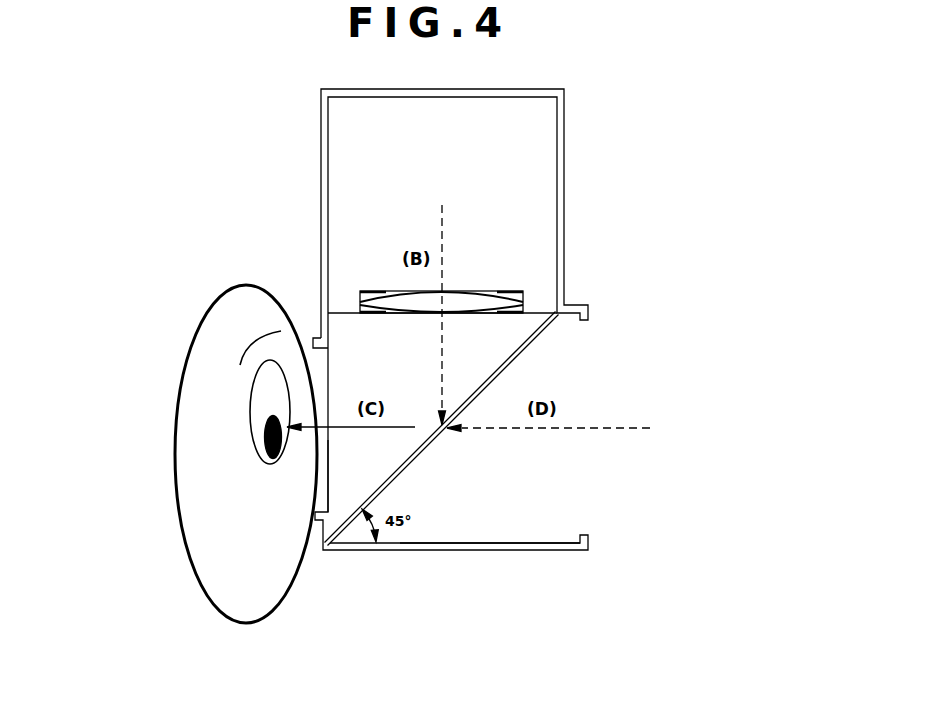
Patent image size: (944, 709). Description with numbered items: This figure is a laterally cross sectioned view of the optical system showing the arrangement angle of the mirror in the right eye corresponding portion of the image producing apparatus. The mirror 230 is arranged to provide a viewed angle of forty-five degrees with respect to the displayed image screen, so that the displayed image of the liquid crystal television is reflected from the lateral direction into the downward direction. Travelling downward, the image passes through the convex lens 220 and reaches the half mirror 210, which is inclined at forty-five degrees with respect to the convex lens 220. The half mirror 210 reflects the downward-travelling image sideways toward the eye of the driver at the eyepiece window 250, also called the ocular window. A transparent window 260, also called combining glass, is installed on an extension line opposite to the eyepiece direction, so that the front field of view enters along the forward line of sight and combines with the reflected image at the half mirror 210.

The half mirror 210 is at (430, 447).
The convex lens 220 is at (388, 298).
The mirror 230 is at (348, 170).
The eyepiece window 250 is at (322, 490).
The transparent window 260 is at (572, 468).